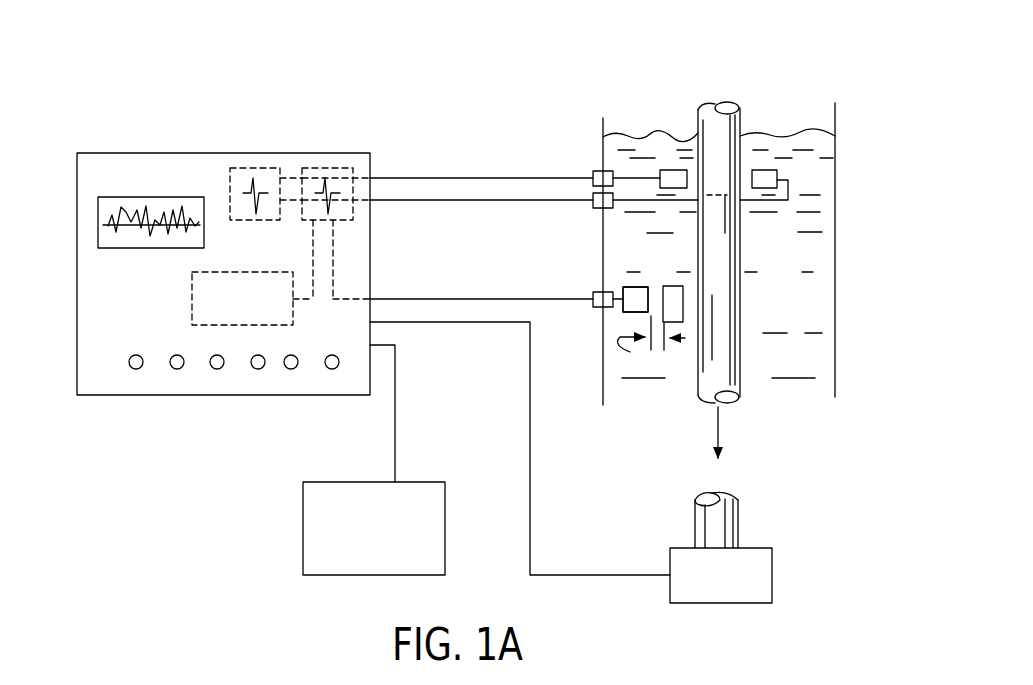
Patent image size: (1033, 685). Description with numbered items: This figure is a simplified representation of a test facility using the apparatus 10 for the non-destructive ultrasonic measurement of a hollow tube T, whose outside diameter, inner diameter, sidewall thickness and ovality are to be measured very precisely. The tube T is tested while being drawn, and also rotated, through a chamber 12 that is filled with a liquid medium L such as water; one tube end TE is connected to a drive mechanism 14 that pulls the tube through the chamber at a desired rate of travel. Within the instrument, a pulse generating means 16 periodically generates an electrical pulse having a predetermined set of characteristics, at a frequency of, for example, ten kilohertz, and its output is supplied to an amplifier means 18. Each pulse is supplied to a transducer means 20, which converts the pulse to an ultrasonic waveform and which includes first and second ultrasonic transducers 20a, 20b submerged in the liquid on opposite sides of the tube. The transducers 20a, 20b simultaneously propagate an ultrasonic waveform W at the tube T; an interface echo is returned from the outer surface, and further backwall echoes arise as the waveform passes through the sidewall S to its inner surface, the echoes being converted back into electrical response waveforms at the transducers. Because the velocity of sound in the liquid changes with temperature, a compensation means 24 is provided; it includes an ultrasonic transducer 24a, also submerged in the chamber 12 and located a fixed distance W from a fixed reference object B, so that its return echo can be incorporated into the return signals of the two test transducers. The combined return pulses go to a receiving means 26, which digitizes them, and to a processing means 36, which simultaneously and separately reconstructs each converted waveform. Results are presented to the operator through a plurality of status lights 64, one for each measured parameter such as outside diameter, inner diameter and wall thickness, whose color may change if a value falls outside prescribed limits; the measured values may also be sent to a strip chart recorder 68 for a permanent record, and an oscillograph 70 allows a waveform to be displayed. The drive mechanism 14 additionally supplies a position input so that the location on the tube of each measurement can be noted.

The apparatus 10 is at (434, 126).
The chamber 12 is at (840, 295).
The drive mechanism 14 is at (776, 572).
The pulse generating means 16 is at (253, 162).
The amplifier means 18 is at (335, 162).
The transducer means 20 is at (742, 140).
The first ultrasonic transducer 20a is at (673, 170).
The second ultrasonic transducer 20b is at (762, 170).
The compensation means 24 is at (617, 283).
The ultrasonic transducer 24a is at (632, 313).
The receiving means 26 is at (149, 283).
The processing means 36 is at (178, 300).
The status lights 64 is at (150, 351).
The strip chart recorder 68 is at (390, 539).
The oscillograph 70 is at (167, 197).
The tube T is at (748, 117).
The tube end TE is at (740, 522).
The sidewall S is at (717, 250).
The liquid medium L is at (795, 284).
The ultrasonic waveform W is at (651, 330).
The reference object B is at (747, 303).